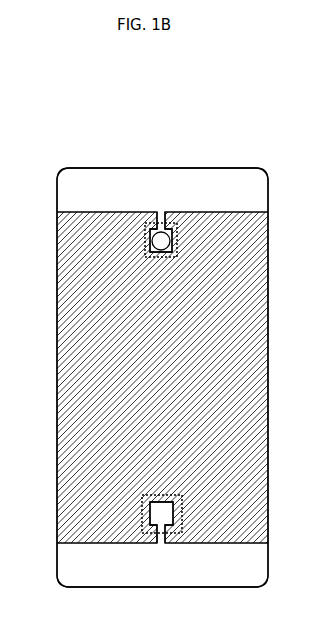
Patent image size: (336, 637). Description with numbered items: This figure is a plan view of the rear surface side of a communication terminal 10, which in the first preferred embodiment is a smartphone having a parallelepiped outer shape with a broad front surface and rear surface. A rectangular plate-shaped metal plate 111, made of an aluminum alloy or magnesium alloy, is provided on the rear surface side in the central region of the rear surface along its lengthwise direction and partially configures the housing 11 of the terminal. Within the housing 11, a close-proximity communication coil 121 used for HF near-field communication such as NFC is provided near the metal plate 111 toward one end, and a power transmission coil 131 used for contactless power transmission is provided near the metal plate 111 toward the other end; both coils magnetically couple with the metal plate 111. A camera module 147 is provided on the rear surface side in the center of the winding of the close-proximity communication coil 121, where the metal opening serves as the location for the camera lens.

The communication terminal 10 is at (241, 129).
The housing 11 is at (57, 182).
The metal plate 111 is at (57, 275).
The close-proximity communication coil 121 is at (180, 217).
The power transmission coil 131 is at (175, 546).
The camera module 147 is at (163, 242).